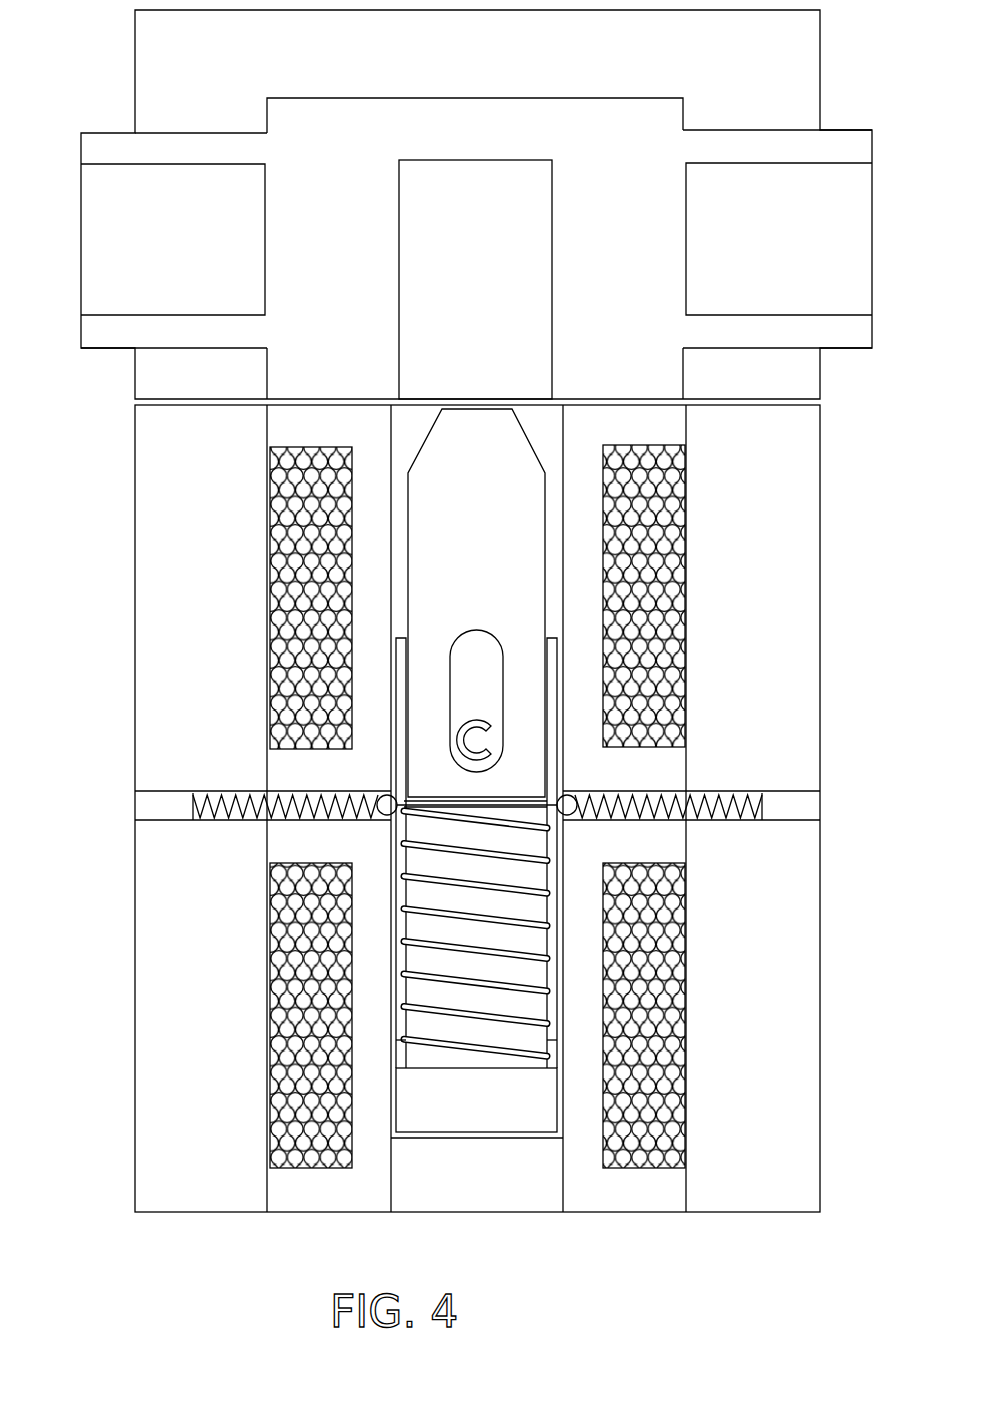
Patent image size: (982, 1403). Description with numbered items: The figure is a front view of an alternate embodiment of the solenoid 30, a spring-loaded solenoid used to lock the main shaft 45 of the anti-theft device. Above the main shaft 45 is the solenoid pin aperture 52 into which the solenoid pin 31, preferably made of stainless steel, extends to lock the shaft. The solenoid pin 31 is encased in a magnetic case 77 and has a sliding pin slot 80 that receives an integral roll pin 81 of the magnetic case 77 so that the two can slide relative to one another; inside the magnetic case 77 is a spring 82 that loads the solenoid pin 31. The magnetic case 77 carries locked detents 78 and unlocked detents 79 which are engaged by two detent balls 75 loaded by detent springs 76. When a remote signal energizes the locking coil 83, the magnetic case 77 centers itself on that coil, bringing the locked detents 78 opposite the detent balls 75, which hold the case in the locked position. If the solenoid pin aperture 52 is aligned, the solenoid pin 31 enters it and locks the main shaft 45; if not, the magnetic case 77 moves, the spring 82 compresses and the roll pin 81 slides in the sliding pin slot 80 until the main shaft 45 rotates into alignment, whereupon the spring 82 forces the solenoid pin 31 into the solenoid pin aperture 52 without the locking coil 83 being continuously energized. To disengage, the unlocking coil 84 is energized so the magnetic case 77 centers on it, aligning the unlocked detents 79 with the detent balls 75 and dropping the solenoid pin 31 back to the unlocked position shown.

The solenoid 30 is at (92, 92).
The main shaft 45 is at (795, 147).
The solenoid pin aperture 52 is at (552, 246).
The solenoid pin 31 is at (525, 435).
The sliding pin slot 80 is at (500, 668).
The roll pin 81 is at (477, 720).
The magnetic case 77 is at (401, 695).
The locking coil 83 is at (305, 497).
The unlocking coil 84 is at (310, 1092).
The detent spring 76 is at (200, 820).
The detent ball 75 is at (385, 795).
The unlocked detent 79 is at (397, 825).
The spring 82 is at (420, 935).
The locked detent 78 is at (395, 1040).